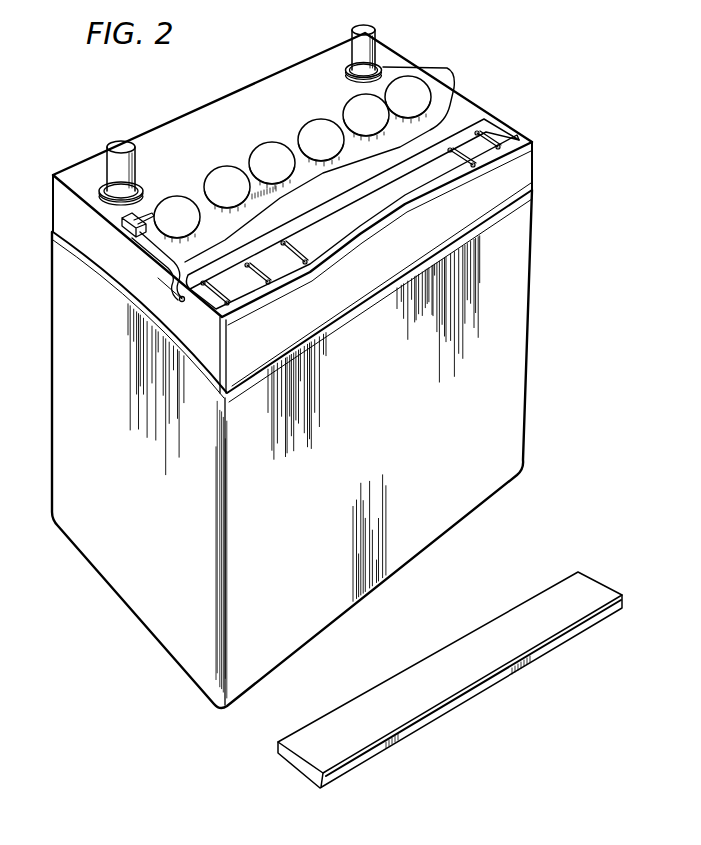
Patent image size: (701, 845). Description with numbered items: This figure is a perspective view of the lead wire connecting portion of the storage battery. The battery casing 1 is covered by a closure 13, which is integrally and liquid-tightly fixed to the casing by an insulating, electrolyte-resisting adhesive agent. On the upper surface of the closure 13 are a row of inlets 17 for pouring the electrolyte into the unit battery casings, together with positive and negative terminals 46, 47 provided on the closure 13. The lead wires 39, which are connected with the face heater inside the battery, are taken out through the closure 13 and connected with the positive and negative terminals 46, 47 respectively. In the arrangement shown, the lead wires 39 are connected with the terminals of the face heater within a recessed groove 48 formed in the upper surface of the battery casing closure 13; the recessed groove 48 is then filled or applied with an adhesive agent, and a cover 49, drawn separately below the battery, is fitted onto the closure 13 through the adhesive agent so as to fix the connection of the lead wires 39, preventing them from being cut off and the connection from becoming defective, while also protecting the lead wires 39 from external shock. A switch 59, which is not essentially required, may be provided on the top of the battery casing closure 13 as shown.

The battery casing 1 is at (56, 362).
The closure 13 is at (214, 110).
The inlets 17 is at (303, 134).
The lead wires 39 is at (447, 110).
The positive terminal 46 is at (132, 167).
The negative terminal 47 is at (358, 46).
The recessed groove 48 is at (497, 137).
The cover 49 is at (423, 667).
The switch 59 is at (124, 237).